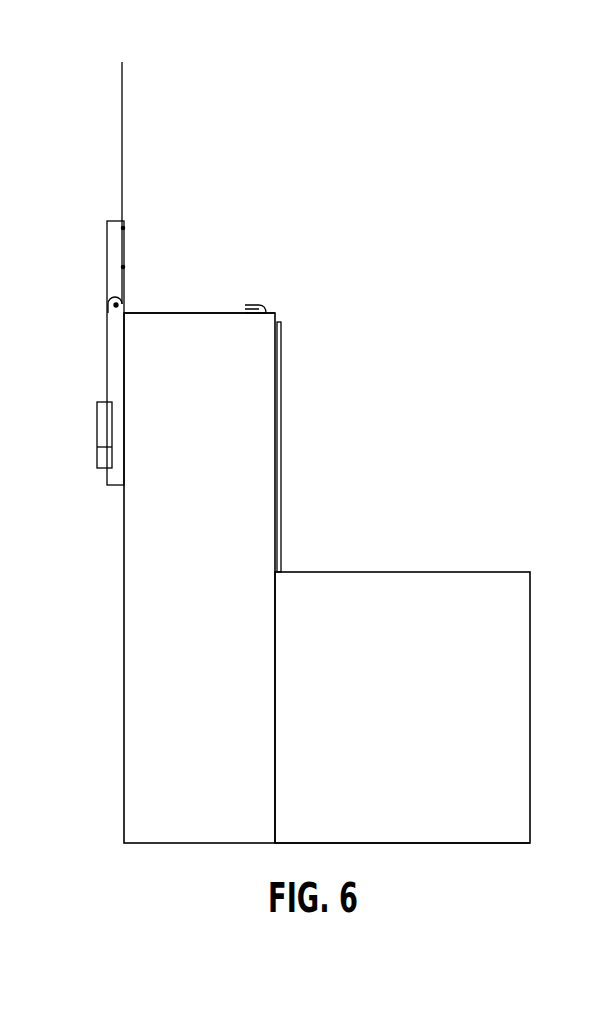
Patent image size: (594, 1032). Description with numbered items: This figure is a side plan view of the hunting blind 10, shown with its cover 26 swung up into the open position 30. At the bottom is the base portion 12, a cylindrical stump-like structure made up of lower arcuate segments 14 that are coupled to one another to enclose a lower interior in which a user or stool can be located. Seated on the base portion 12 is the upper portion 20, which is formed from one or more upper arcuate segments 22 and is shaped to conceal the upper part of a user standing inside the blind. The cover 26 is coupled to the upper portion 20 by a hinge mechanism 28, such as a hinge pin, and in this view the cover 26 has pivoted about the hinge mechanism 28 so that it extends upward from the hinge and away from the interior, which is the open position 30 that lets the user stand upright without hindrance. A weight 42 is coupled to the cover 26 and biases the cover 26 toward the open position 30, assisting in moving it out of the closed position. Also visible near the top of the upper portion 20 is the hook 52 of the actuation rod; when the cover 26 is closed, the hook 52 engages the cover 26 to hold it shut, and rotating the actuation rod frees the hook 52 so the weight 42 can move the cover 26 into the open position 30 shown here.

The hunting blind 10 is at (348, 153).
The base portion 12 is at (480, 655).
The lower arcuate segments 14 is at (480, 757).
The upper portion 20 is at (165, 363).
The upper arcuate segments 22 is at (165, 411).
The cover 26 is at (122, 109).
The hinge mechanism 28 is at (116, 305).
The open position 30 is at (233, 238).
The weight 42 is at (97, 447).
The hook 52 is at (253, 304).